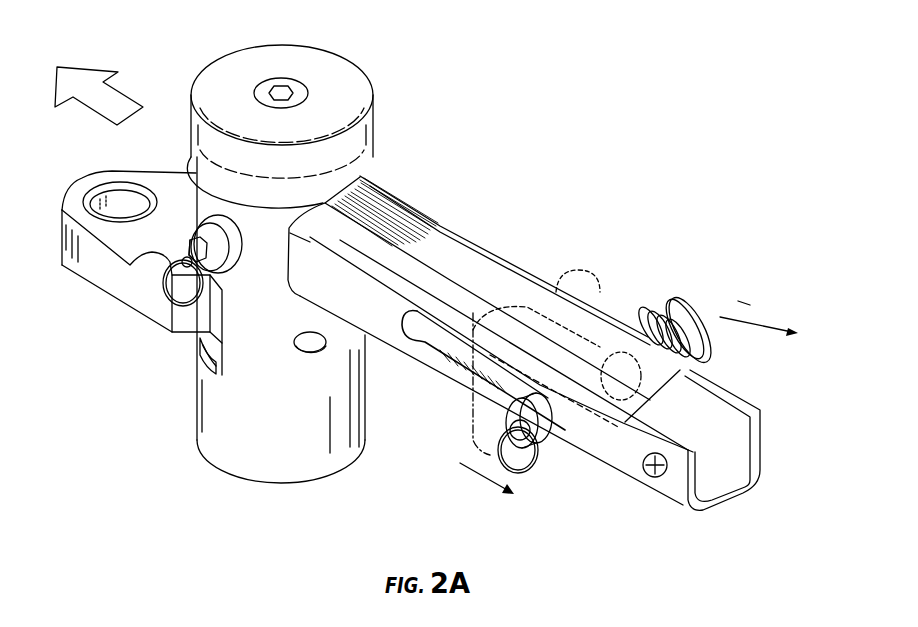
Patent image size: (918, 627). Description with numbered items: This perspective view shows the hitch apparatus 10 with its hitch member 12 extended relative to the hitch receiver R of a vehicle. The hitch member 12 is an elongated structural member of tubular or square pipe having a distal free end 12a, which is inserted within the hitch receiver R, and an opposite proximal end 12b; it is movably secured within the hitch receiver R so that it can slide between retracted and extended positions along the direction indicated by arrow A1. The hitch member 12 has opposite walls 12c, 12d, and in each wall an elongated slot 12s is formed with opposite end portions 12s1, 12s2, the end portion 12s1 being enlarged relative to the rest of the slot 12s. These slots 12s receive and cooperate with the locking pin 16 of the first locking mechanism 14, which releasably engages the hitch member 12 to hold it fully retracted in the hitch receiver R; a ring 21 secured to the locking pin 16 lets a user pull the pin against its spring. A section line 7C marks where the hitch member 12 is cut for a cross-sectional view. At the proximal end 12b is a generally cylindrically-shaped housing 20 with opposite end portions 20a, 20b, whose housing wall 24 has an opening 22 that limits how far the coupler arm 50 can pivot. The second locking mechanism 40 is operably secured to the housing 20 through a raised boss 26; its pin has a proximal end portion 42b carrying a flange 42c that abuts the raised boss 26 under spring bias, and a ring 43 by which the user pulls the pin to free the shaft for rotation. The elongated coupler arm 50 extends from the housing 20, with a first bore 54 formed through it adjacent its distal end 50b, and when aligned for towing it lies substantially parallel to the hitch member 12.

The hitch apparatus 10 is at (497, 148).
The hitch member 12 is at (524, 344).
The distal free end 12a is at (700, 515).
The proximal end 12b is at (403, 192).
The wall 12c is at (362, 298).
The wall 12d is at (512, 250).
The elongated slot 12s is at (497, 426).
The slot end portion 12s1 is at (437, 352).
The slot end portion 12s2 is at (563, 432).
The first locking mechanism 14 is at (700, 288).
The locking pin 16 is at (500, 477).
The housing 20 is at (312, 40).
The housing end portion 20a is at (233, 465).
The housing end portion 20b is at (208, 187).
The ring 21 is at (508, 442).
The housing opening 22 is at (197, 345).
The housing wall 24 is at (217, 402).
The raised boss 26 is at (223, 228).
The second locking mechanism 40 is at (170, 292).
The pin proximal end portion 42b is at (133, 276).
The flange 42c is at (227, 265).
The ring 43 is at (173, 298).
The coupler arm 50 is at (113, 231).
The coupler arm distal end 50b is at (61, 183).
The first bore 54 is at (113, 198).
The arrow A1 is at (135, 92).
The hitch receiver R is at (598, 272).
The section line 7C is at (640, 408).